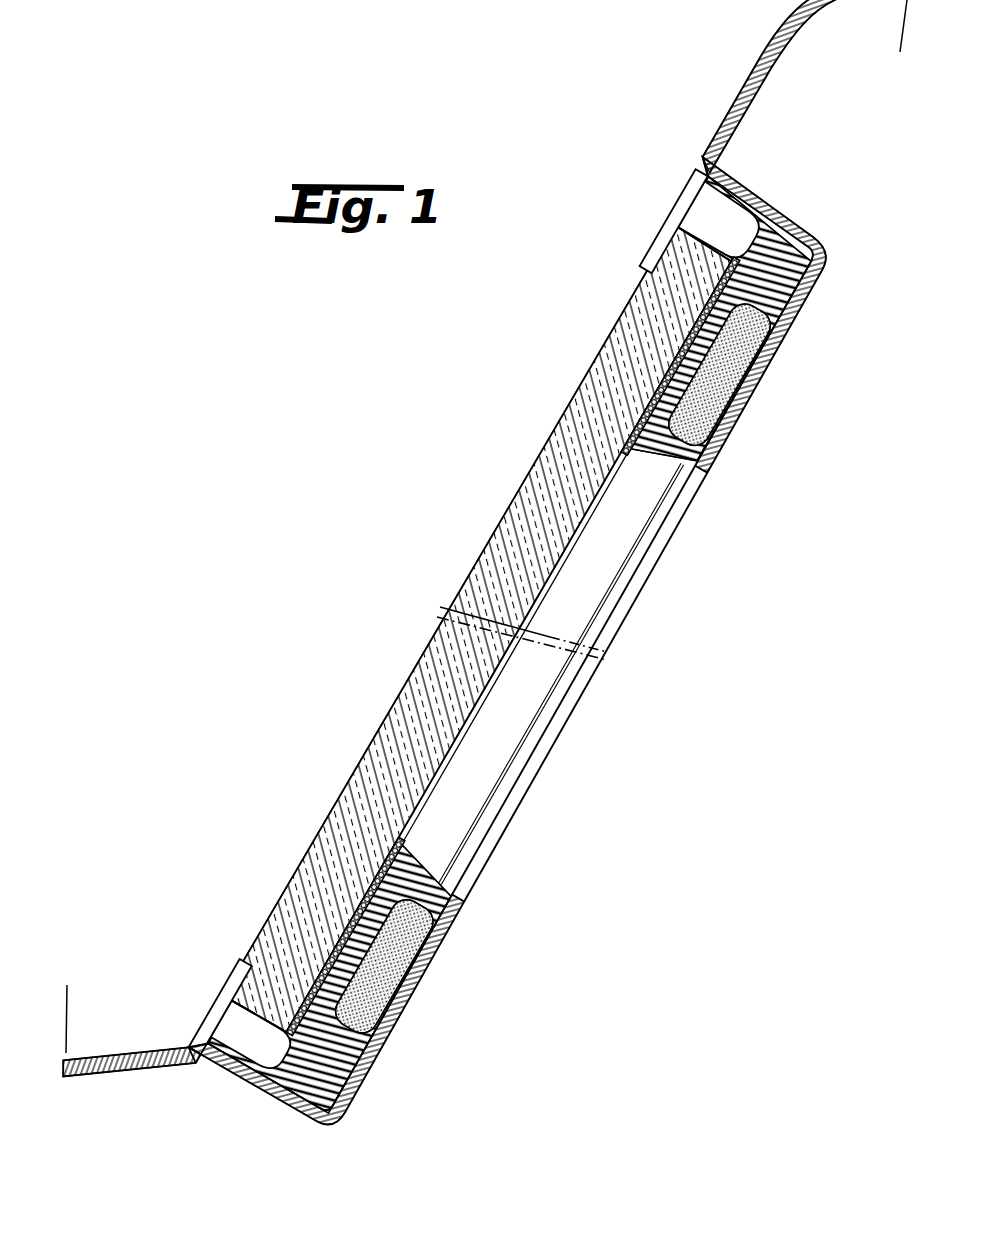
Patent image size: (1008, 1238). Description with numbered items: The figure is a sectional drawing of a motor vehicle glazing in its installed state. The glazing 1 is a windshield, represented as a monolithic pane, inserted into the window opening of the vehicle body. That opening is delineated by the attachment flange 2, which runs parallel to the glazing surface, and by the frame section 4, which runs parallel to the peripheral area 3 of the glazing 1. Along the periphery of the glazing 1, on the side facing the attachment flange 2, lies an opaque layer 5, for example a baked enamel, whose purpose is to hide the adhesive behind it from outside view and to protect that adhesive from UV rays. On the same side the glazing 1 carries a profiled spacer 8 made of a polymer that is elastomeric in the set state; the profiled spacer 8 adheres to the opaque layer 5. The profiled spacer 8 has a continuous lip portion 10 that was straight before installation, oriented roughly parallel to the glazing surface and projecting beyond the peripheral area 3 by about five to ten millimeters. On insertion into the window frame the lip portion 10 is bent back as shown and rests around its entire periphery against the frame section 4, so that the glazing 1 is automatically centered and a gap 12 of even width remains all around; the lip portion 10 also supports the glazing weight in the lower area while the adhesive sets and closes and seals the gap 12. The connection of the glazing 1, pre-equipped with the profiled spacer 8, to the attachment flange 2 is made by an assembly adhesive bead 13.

The glazing 1 is at (528, 488).
The attachment flange 2 is at (732, 422).
The peripheral area 3 is at (690, 236).
The frame section 4 is at (760, 202).
The opaque layer 5 is at (623, 458).
The profiled spacer 8 is at (678, 345).
The lip portion 10 is at (694, 190).
The gap 12 is at (672, 180).
The assembly adhesive bead 13 is at (738, 362).